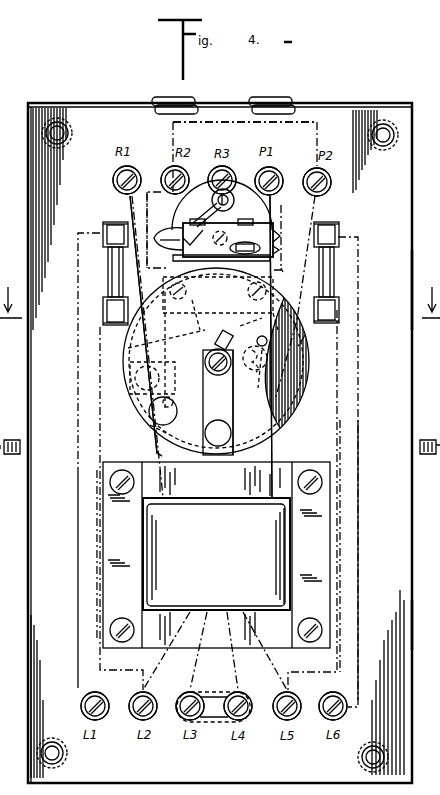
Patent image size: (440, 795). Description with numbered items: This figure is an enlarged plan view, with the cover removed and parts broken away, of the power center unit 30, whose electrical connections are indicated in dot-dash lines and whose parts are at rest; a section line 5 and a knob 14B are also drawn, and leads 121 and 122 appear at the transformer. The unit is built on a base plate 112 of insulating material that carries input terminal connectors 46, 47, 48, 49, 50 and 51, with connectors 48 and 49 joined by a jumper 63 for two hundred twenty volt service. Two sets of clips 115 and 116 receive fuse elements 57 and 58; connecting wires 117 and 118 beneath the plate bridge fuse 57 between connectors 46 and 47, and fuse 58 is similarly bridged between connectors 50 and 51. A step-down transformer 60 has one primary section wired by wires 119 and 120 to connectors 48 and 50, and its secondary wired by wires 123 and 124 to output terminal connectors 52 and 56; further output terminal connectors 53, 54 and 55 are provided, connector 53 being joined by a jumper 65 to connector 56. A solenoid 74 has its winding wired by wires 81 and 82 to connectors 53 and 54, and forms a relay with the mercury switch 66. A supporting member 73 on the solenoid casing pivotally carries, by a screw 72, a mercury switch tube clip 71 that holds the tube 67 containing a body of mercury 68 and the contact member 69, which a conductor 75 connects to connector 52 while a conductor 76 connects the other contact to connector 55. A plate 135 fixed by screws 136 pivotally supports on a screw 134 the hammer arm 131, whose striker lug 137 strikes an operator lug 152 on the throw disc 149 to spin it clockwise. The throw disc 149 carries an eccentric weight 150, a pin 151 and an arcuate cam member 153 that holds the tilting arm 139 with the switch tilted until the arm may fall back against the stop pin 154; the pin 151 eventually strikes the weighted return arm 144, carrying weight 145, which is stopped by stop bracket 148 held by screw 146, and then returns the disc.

The section line 5- 5 is at (220, 311).
The power center unit 30 is at (418, 619).
The input terminal connector 46 is at (82, 714).
The input terminal connector 47 is at (133, 720).
The input terminal connector 48 is at (181, 720).
The input terminal connector 49 is at (228, 721).
The input terminal connector 50 is at (277, 720).
The input terminal connector 51 is at (323, 720).
The output terminal connector 52 is at (114, 175).
The output terminal connector 53 is at (162, 168).
The output terminal connector 54 is at (208, 166).
The output terminal connector 55 is at (257, 166).
The output terminal connector 56 is at (308, 169).
The fuse element 57 is at (104, 270).
The fuse element 58 is at (338, 278).
The step-down transformer 60 is at (296, 503).
The jumper 63 is at (212, 694).
The jumper 65 is at (310, 117).
The mercury switch 66 is at (276, 226).
The tube 67 is at (278, 233).
The body of mercury 68 is at (278, 250).
The contact member 69 is at (183, 243).
The mercury switch tube clip 71 is at (245, 220).
The screw 72 is at (222, 265).
The supporting member 73 is at (240, 225).
The solenoid 74 is at (281, 270).
The conductor 75 is at (186, 225).
The conductor 76 is at (213, 206).
The wire 81 is at (148, 190).
The wire 82 is at (240, 168).
The base plate 112 is at (400, 278).
The clips 115 is at (101, 225).
The clips 116 is at (102, 307).
The connecting wire 117 is at (77, 474).
The connecting wire 118 is at (97, 538).
The wire 119 is at (185, 660).
The wire 120 is at (233, 670).
The transformer lead 121 is at (198, 655).
The transformer lead 122 is at (272, 656).
The wire 123 is at (144, 328).
The wire 124 is at (278, 470).
The hammer arm 131 is at (143, 385).
The screw 134 is at (218, 402).
The plate 135 is at (300, 398).
The screws 136 is at (281, 321).
The striker lug 137 is at (133, 383).
The tilting arm 139 is at (128, 348).
The return arm 144 is at (233, 410).
The weight 145 is at (232, 435).
The screw 146 is at (258, 336).
The stop bracket 148 is at (247, 322).
The throw disc 149 is at (304, 338).
The weight 150 is at (150, 430).
The pin 151 is at (254, 373).
The operator lug 152 is at (138, 364).
The arcuate cam member 153 is at (175, 415).
The stop pin 154 is at (199, 315).
The knob 14B is at (228, 333).